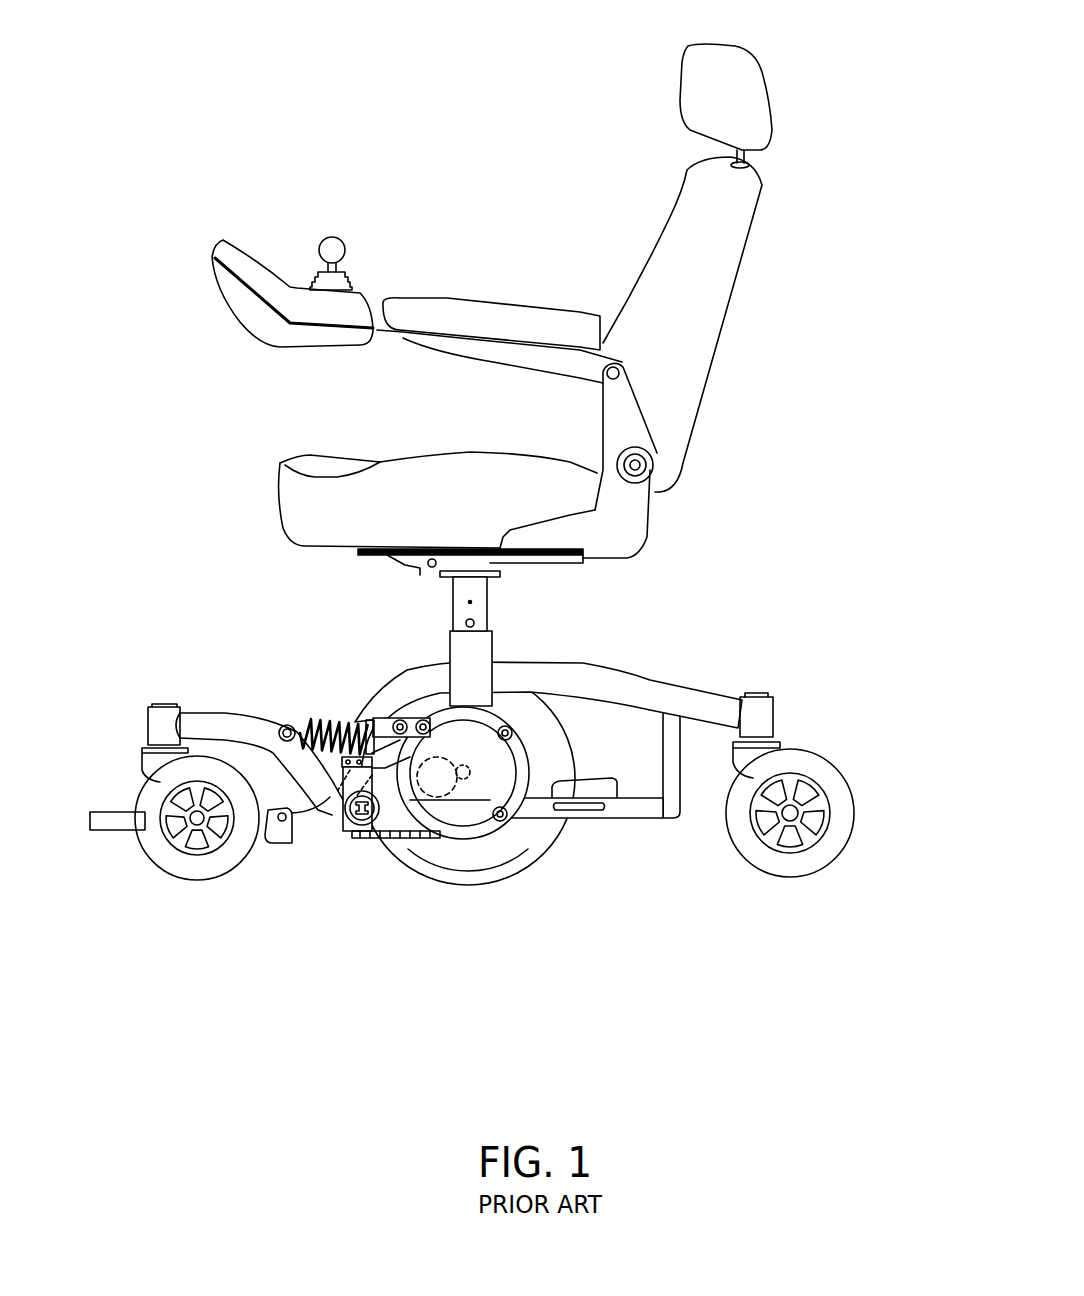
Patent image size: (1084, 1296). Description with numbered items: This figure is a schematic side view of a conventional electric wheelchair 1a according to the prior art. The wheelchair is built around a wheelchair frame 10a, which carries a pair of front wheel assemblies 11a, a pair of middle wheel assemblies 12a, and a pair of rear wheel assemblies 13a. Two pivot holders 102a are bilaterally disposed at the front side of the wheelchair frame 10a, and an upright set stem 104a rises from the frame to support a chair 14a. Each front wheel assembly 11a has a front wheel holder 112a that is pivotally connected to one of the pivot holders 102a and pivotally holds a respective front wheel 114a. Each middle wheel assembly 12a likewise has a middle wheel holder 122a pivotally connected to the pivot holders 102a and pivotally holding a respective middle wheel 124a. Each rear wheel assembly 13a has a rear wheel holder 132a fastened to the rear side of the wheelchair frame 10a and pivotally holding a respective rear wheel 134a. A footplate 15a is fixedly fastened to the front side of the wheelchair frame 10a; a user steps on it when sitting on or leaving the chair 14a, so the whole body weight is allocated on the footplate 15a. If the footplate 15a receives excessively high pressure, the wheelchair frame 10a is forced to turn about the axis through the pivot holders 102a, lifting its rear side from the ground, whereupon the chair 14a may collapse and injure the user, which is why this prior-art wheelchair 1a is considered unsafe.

The electric wheelchair 1a is at (304, 142).
The wheelchair frame 10a is at (640, 676).
The pivot holder 102a is at (338, 830).
The upright set stem 104a is at (482, 610).
The front wheel assembly 11a is at (255, 582).
The front wheel holder 112a is at (225, 718).
The front wheel 114a is at (203, 770).
The middle wheel assembly 12a is at (572, 993).
The middle wheel holder 122a is at (403, 826).
The middle wheel 124a is at (480, 828).
The rear wheel assembly 13a is at (907, 592).
The rear wheel holder 132a is at (770, 722).
The rear wheel 134a is at (832, 782).
The chair 14a is at (736, 287).
The footplate 15a is at (107, 822).